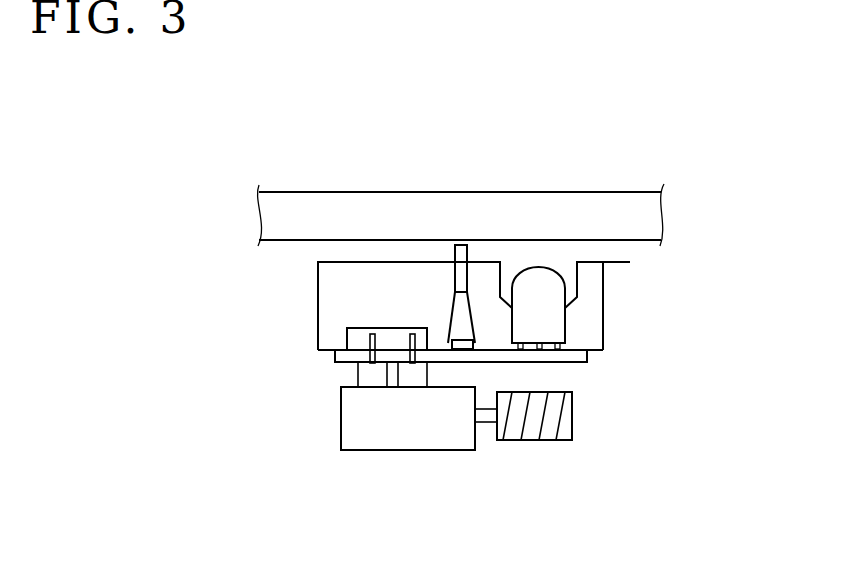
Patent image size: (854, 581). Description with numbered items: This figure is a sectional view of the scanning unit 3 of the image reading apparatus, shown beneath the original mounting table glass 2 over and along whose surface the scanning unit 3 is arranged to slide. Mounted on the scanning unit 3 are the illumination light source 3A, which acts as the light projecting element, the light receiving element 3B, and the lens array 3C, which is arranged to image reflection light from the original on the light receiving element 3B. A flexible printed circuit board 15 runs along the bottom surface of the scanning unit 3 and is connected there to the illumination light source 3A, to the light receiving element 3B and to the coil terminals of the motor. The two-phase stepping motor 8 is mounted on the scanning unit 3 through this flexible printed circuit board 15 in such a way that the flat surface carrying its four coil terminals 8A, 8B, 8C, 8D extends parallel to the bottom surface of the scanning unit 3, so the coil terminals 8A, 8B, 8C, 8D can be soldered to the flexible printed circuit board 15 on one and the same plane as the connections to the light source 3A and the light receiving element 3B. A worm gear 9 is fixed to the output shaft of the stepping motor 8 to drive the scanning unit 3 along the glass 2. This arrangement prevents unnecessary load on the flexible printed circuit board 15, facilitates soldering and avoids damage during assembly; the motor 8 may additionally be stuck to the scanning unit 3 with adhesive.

The original mounting table glass 2 is at (590, 200).
The scanning unit 3 is at (325, 290).
The illumination light source 3A is at (557, 324).
The light receiving element 3B is at (455, 343).
The lens array 3C is at (465, 250).
The stepping motor 8 is at (402, 440).
The coil terminal 8A is at (372, 337).
The coil terminal 8B is at (335, 364).
The coil terminal 8C is at (413, 328).
The coil terminal 8D is at (383, 247).
The worm gear 9 is at (547, 432).
The flexible printed circuit board 15 is at (587, 357).